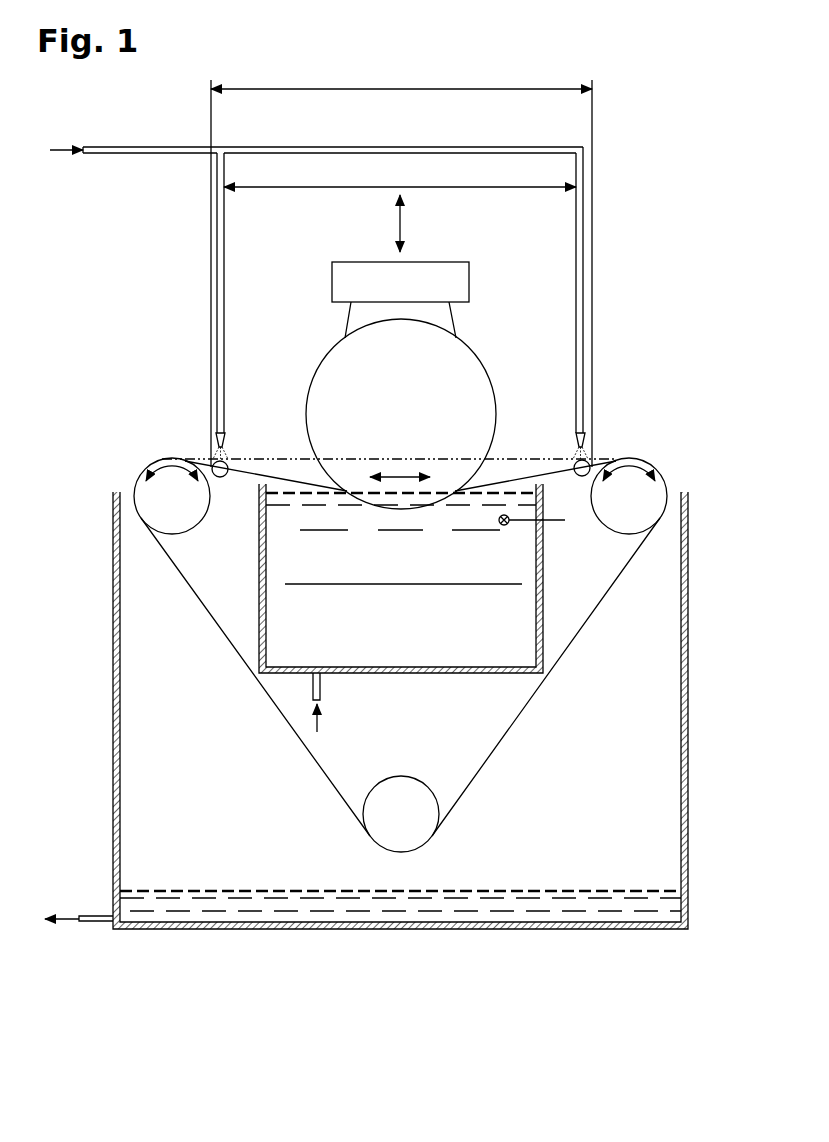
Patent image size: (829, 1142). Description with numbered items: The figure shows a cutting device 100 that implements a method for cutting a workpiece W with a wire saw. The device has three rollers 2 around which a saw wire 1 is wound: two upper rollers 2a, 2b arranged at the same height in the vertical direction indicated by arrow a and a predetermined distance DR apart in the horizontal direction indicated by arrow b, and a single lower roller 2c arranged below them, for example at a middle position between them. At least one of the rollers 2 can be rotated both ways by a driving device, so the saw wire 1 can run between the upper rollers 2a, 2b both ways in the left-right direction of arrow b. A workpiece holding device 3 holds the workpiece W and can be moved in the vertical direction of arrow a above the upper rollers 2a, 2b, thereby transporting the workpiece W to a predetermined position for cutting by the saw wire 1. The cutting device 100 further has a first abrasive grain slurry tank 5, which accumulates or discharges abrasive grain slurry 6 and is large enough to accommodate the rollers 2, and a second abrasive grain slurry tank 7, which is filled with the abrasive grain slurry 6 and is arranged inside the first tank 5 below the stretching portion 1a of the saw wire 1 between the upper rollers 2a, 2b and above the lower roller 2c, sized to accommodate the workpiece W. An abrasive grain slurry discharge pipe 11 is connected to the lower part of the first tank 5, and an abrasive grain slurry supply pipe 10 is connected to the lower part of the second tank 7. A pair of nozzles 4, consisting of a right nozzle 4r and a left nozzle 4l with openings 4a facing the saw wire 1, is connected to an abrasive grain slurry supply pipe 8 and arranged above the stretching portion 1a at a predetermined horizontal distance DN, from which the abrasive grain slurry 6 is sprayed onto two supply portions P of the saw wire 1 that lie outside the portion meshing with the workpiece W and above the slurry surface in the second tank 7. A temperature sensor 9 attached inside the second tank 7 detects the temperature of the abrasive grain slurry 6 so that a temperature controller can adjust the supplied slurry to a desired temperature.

The cutting device 100 is at (606, 165).
The saw wire 1 is at (400, 631).
The stretching portion 1a is at (505, 482).
The rollers 2 is at (416, 632).
The upper roller 2a is at (662, 480).
The upper roller 2b is at (142, 478).
The lower roller 2c is at (420, 825).
The workpiece holding device 3 is at (455, 275).
The nozzle pair 4 is at (401, 297).
The left nozzle 4l is at (215, 420).
The right nozzle 4r is at (586, 448).
The opening 4a is at (226, 437).
The first abrasive grain slurry tank 5 is at (390, 926).
The abrasive grain slurry 6 is at (216, 452).
The second abrasive grain slurry tank 7 is at (543, 596).
The abrasive grain slurry supply pipe 8 is at (60, 150).
The temperature sensor 9 is at (505, 526).
The abrasive grain slurry supply pipe 10 is at (318, 730).
The abrasive grain slurry discharge pipe 11 is at (73, 921).
The workpiece W is at (470, 372).
The supply portions P is at (228, 465).
The vertical direction arrow a is at (402, 222).
The left-right direction arrow b is at (400, 477).
The predetermined distance between upper rollers DR is at (401, 264).
The predetermined distance between nozzles DN is at (400, 174).